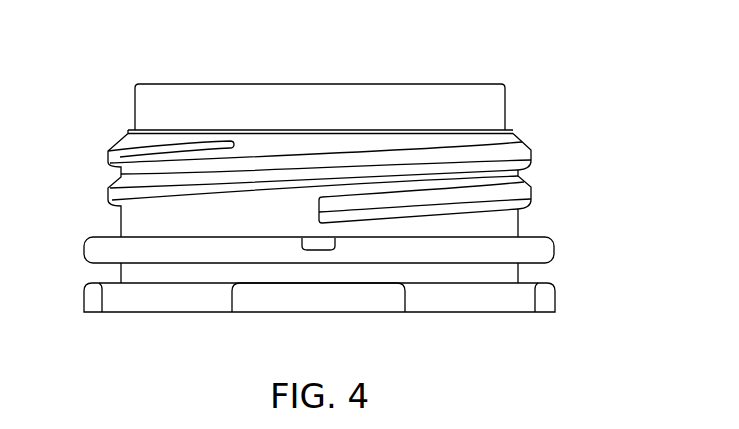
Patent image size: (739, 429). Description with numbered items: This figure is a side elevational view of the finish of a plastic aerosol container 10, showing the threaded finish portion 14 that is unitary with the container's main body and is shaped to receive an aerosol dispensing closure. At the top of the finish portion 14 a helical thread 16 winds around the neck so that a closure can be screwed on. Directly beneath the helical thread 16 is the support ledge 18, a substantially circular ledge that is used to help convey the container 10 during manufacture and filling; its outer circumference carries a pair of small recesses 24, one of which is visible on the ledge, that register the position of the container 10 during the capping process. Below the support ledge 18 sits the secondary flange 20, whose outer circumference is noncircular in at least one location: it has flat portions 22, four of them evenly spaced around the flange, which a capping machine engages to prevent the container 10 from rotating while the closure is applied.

The plastic aerosol container 10 is at (367, 206).
The threaded finish portion 14 is at (537, 125).
The helical thread 16 is at (124, 137).
The support ledge 18 is at (346, 234).
The secondary flange 20 is at (343, 320).
The flat portions 22 is at (364, 300).
The small recesses 24 is at (318, 240).